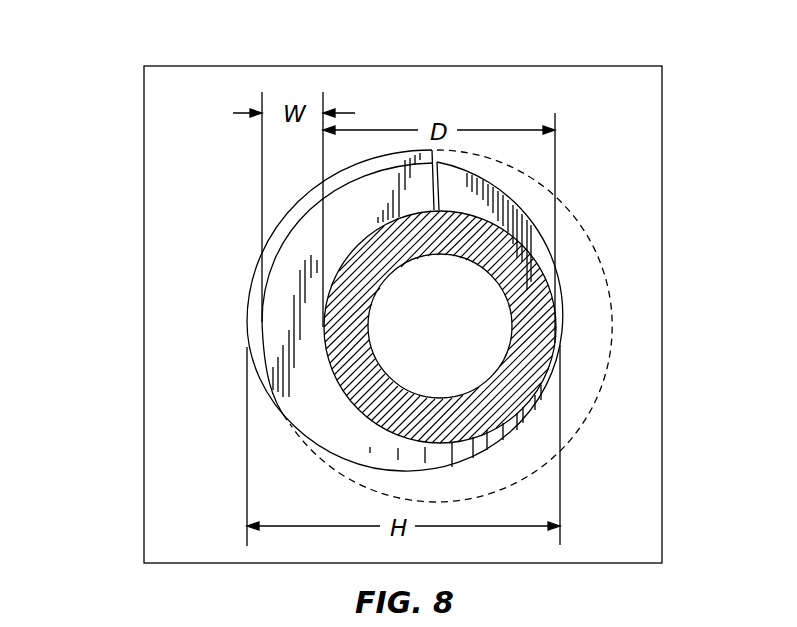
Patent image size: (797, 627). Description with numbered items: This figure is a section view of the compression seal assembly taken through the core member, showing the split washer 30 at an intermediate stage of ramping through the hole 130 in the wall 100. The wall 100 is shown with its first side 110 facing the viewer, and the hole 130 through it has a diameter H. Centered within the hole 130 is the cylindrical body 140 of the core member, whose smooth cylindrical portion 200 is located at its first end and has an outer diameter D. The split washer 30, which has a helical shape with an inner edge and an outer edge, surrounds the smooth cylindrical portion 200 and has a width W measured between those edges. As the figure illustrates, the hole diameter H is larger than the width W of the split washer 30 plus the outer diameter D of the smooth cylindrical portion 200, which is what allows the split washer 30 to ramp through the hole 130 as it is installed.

The wall 100 is at (93, 128).
The first side 110 is at (170, 197).
The hole 130 is at (255, 303).
The split washer 30 is at (278, 316).
The cylindrical body 140 is at (530, 355).
The smooth cylindrical portion 200 is at (326, 365).